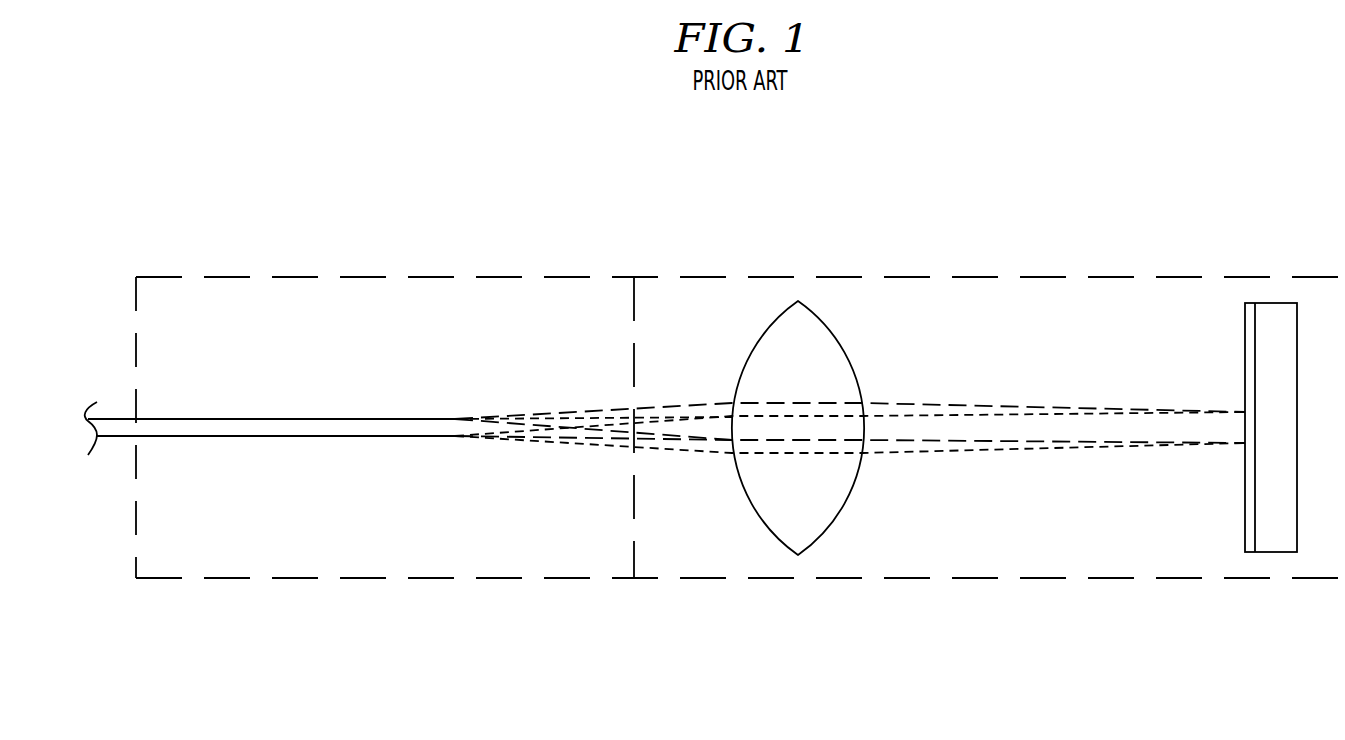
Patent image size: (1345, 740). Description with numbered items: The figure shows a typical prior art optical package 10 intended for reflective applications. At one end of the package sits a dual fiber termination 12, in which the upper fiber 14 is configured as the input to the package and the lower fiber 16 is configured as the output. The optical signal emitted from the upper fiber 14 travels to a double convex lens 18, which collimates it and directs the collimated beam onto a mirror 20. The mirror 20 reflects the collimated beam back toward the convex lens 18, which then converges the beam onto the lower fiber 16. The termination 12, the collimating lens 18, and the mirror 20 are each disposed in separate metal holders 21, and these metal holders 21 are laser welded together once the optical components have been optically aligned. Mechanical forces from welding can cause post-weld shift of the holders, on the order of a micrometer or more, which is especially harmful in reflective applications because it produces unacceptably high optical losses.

The optical package 10 is at (720, 248).
The dual fiber termination 12 is at (313, 398).
The upper fiber 14 is at (202, 419).
The lower fiber 16 is at (408, 436).
The double convex lens 18 is at (835, 518).
The mirror 20 is at (1263, 558).
The metal holders 21 is at (708, 578).